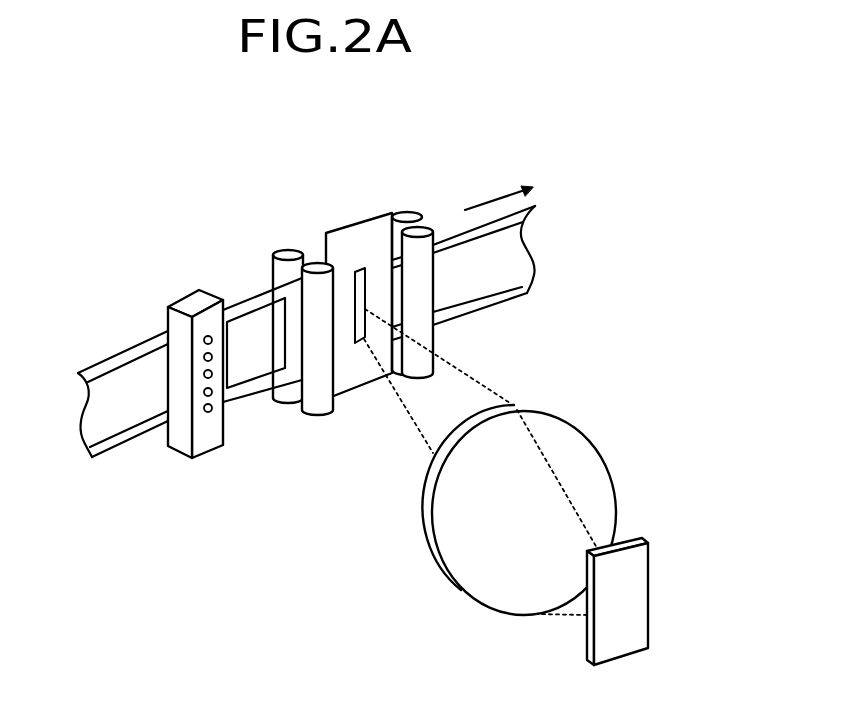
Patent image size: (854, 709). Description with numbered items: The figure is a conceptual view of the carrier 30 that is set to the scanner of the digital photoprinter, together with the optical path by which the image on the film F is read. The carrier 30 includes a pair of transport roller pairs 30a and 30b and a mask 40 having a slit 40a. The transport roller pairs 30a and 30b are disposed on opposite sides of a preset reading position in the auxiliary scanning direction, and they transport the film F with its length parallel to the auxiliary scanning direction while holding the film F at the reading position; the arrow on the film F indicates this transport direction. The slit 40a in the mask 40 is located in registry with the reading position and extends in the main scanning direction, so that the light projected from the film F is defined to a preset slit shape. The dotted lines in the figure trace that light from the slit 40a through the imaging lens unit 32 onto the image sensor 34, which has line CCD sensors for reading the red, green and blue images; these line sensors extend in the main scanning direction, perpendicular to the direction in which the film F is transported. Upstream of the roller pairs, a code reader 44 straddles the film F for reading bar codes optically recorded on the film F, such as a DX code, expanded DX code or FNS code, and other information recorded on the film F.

The carrier 30 is at (418, 323).
The transport roller pair 30a is at (315, 398).
The transport roller pair 30b is at (418, 308).
The imaging lens unit 32 is at (567, 443).
The image sensor 34 is at (630, 592).
The mask 40 is at (386, 302).
The slit 40a is at (360, 268).
The code reader 44 is at (187, 300).
The film F is at (513, 247).